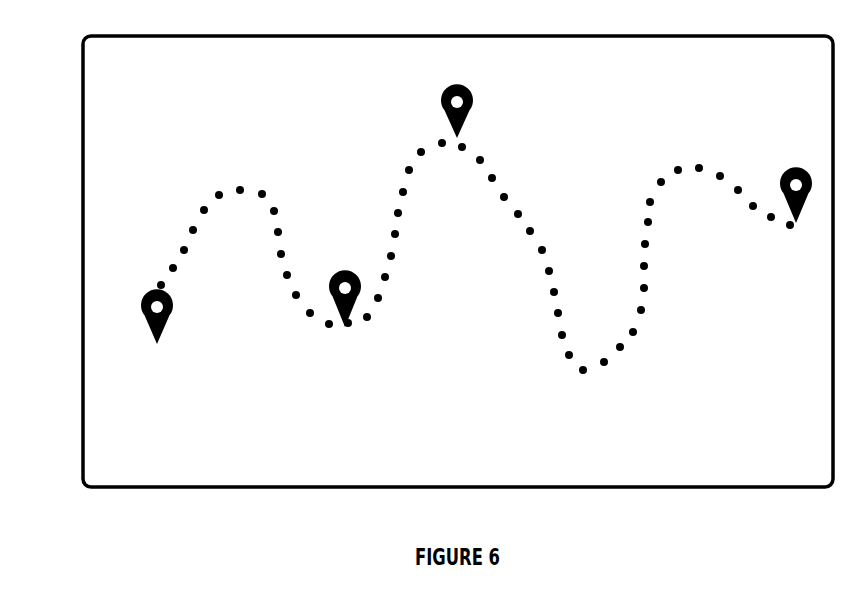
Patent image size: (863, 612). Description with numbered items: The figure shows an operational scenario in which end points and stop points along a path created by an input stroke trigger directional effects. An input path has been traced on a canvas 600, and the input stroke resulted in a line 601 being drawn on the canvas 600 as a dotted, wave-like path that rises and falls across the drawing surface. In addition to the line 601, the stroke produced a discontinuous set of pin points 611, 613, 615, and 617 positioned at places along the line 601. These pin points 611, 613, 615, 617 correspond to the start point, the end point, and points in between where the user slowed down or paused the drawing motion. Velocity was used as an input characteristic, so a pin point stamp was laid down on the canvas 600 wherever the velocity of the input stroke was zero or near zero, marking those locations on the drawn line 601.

The canvas 600 is at (224, 470).
The line 601 is at (546, 228).
The pin point 611 is at (154, 356).
The pin point 613 is at (353, 327).
The pin point 615 is at (480, 98).
The pin point 617 is at (800, 158).